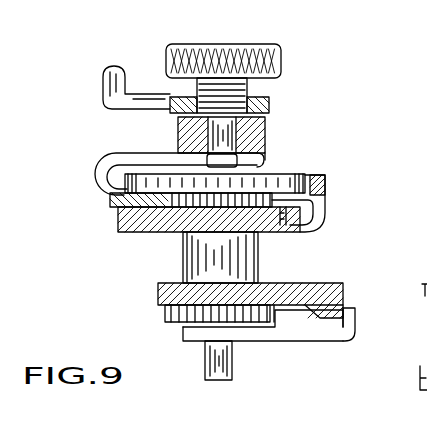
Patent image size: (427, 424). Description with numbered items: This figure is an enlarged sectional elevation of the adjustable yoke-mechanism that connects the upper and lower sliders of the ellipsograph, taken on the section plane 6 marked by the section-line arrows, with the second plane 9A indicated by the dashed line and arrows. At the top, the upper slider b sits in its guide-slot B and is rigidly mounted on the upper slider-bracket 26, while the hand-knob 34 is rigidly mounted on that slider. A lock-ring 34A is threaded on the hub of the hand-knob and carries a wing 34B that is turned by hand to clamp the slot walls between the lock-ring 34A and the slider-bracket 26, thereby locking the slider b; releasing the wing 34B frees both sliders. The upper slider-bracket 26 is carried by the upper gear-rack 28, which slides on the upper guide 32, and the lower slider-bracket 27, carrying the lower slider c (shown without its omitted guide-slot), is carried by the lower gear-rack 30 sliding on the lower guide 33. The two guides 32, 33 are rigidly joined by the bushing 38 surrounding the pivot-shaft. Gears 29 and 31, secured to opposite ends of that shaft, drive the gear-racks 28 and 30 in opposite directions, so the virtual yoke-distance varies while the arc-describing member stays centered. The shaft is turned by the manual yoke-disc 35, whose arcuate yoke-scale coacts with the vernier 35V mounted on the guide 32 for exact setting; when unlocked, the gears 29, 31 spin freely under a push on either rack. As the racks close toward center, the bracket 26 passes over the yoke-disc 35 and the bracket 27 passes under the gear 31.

The section plane 6- 6 is at (219, 44).
The section plane 9A- 9A is at (92, 164).
The hand-knob 34 is at (221, 45).
The lock-ring 34A is at (270, 100).
The wing 34B is at (106, 70).
The guide-slot B is at (266, 130).
The upper slider b is at (181, 128).
The upper slider-bracket 26 is at (258, 160).
The yoke-disc 35 is at (127, 184).
The vernier 35V is at (327, 186).
The upper gear-rack 28 is at (112, 201).
The upper gear 29 is at (325, 205).
The upper guide 32 is at (128, 233).
The bushing 38 is at (259, 256).
The lower guide 33 is at (158, 290).
The lower gear 31 is at (167, 313).
The lower slider-bracket 27 is at (183, 334).
The lower gear-rack 30 is at (300, 322).
The lower slider c is at (205, 363).